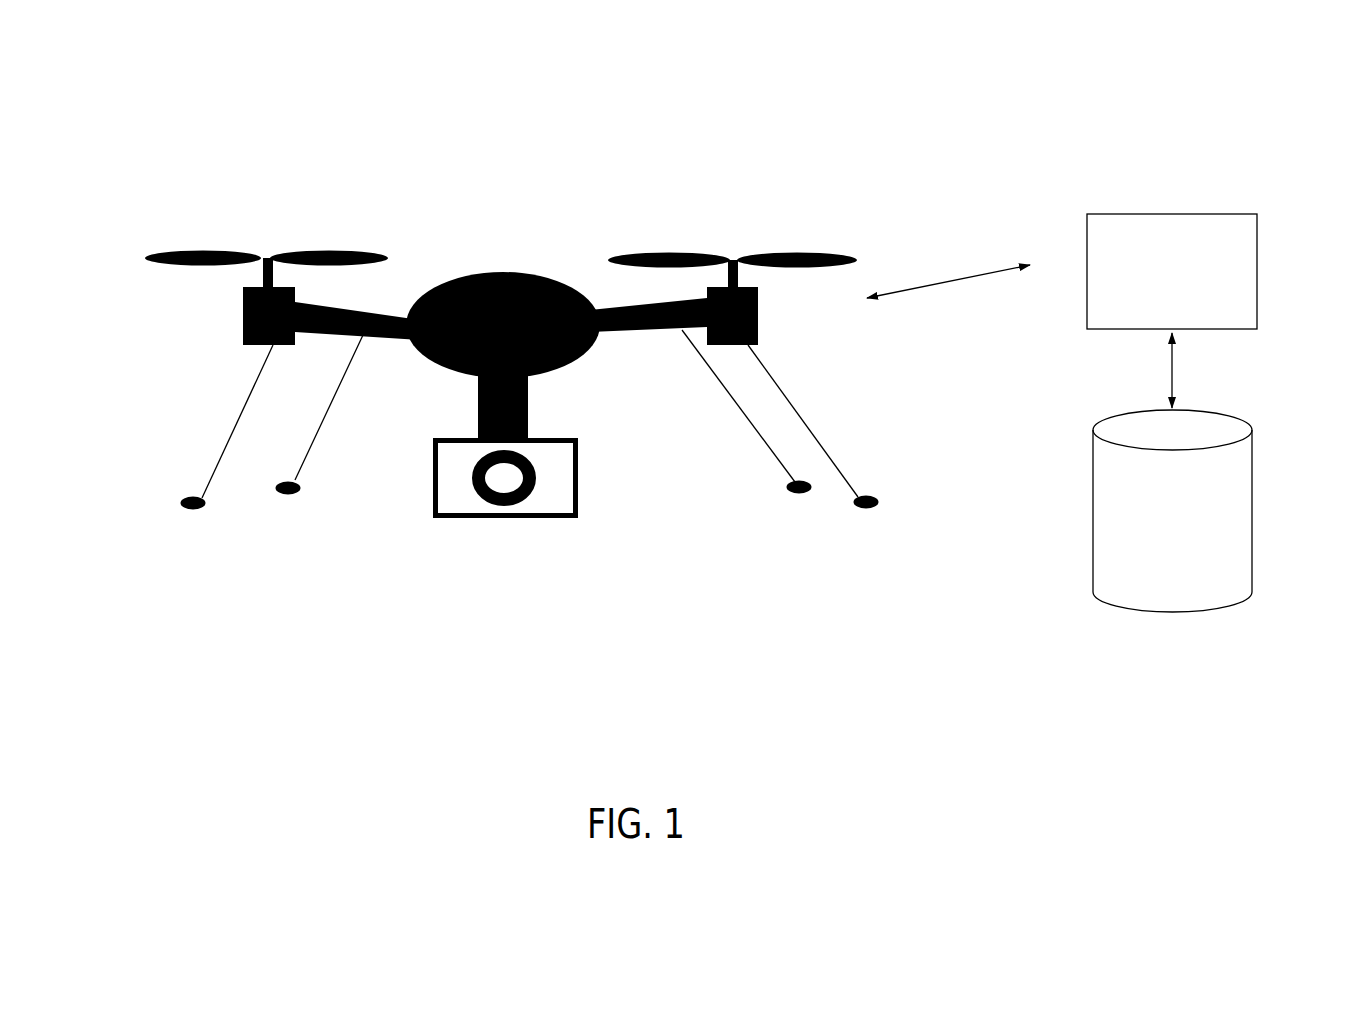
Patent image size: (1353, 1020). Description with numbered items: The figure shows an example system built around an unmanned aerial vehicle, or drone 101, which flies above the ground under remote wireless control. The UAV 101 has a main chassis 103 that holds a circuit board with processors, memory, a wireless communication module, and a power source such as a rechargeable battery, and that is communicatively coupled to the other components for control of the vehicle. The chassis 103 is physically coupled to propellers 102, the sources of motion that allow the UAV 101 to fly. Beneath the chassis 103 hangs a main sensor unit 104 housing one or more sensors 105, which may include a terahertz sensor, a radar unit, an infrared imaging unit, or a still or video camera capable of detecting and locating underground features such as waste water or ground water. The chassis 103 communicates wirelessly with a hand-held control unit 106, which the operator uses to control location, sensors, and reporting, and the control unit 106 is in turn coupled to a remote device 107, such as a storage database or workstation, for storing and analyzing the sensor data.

The UAV 101 is at (232, 117).
The propeller 102 is at (228, 242).
The main chassis 103 is at (503, 273).
The main sensor unit 104 is at (433, 518).
The sensors 105 is at (530, 493).
The control unit 106 is at (1172, 271).
The remote device 107 is at (1172, 511).